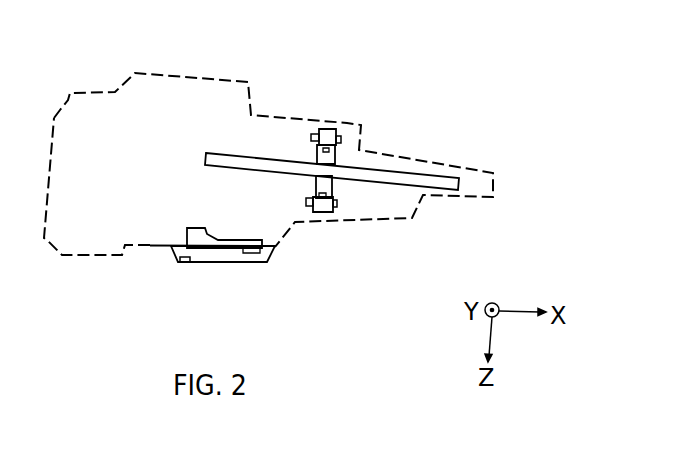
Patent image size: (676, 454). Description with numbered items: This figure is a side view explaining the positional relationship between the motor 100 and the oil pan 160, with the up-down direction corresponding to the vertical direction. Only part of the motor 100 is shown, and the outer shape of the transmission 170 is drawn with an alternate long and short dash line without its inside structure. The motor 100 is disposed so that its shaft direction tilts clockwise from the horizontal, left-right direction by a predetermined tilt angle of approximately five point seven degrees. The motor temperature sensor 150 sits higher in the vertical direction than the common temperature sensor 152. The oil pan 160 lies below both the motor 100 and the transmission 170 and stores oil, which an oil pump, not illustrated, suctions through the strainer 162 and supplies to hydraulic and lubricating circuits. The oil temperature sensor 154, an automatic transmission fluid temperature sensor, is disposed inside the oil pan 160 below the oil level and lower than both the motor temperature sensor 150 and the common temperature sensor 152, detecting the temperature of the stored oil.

The motor 100 is at (347, 141).
The motor temperature sensor 150 is at (317, 150).
The common temperature sensor 152 is at (337, 199).
The oil temperature sensor 154 is at (192, 259).
The oil pan 160 is at (232, 263).
The strainer 162 is at (243, 240).
The transmission 170 is at (178, 78).